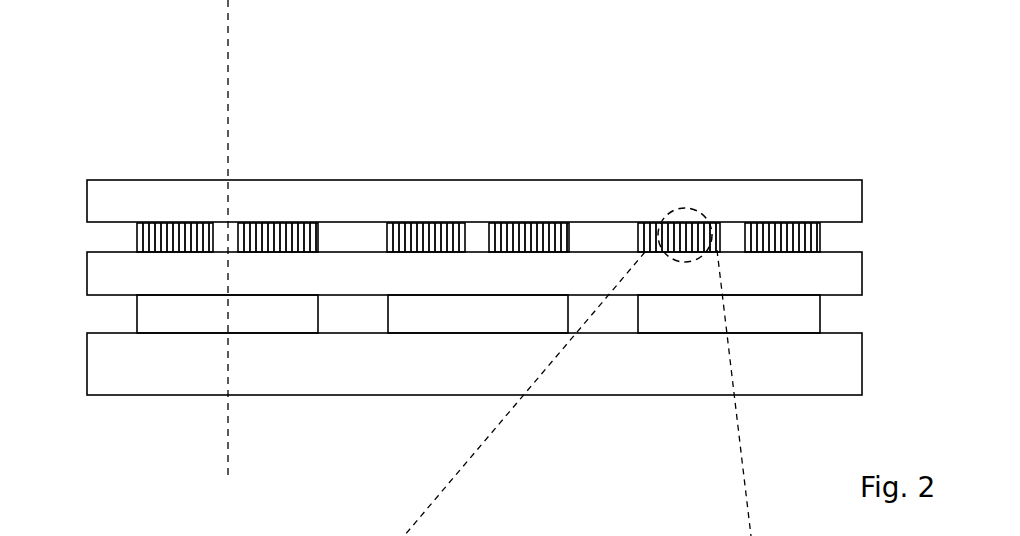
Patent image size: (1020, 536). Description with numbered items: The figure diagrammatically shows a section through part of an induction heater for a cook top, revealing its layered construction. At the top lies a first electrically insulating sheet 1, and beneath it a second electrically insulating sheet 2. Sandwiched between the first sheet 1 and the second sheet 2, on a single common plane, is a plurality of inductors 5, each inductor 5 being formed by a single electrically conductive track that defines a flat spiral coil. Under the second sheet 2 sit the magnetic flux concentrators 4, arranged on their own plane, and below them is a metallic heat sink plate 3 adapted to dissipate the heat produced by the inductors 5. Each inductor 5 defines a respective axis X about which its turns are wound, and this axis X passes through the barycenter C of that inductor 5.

The first electrically insulating sheet 1 is at (108, 193).
The second electrically insulating sheet 2 is at (100, 278).
The metallic heat sink plate 3 is at (93, 338).
The magnetic flux concentrator 4 is at (258, 305).
The inductor 5 is at (143, 243).
The barycenter C is at (475, 237).
The axis X is at (228, 95).